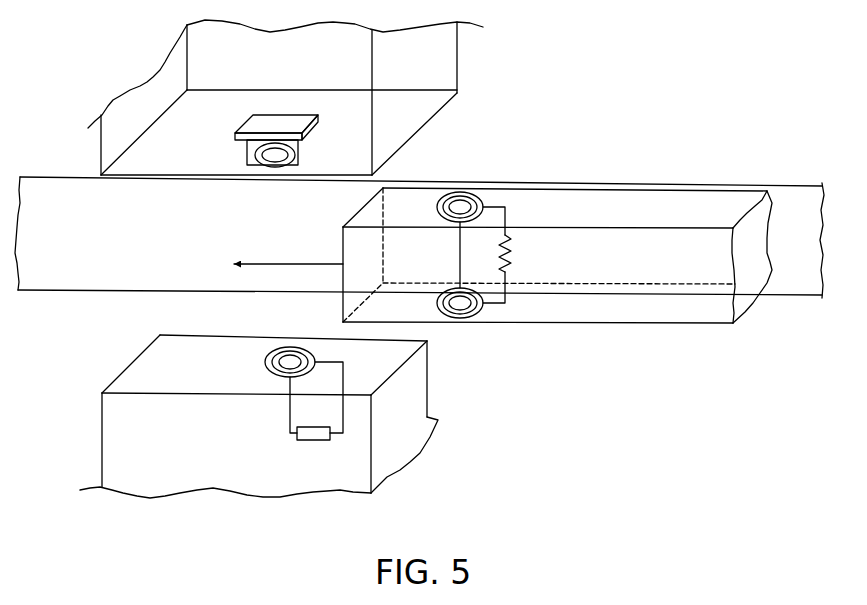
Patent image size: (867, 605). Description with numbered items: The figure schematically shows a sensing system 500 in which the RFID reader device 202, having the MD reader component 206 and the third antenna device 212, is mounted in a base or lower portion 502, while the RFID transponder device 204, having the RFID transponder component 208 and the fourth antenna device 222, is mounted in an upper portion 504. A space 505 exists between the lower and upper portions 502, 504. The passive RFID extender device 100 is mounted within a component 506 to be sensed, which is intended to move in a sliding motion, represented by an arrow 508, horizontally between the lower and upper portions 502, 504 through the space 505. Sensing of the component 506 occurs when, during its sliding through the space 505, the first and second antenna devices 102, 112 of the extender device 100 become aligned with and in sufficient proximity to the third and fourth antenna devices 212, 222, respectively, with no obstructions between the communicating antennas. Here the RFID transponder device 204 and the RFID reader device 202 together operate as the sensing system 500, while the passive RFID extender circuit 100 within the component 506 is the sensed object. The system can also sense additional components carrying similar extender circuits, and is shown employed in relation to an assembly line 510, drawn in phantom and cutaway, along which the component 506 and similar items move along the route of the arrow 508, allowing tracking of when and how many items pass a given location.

The passive RFID extender device 100 is at (557, 255).
The first antenna device 102 is at (436, 301).
The second antenna device 112 is at (436, 207).
The RFID reader device 202 is at (272, 408).
The RFID transponder device 204 is at (269, 141).
The MD reader component 206 is at (288, 447).
The RFID transponder component 208 is at (303, 127).
The third antenna device 212 is at (258, 363).
The fourth antenna device 222 is at (299, 164).
The sensing system 500 is at (300, 259).
The lower portion 502 is at (428, 398).
The upper portion 504 is at (457, 77).
The space 505 is at (130, 323).
The component 506 is at (419, 242).
The arrow 508 is at (277, 260).
The assembly line 510 is at (33, 291).